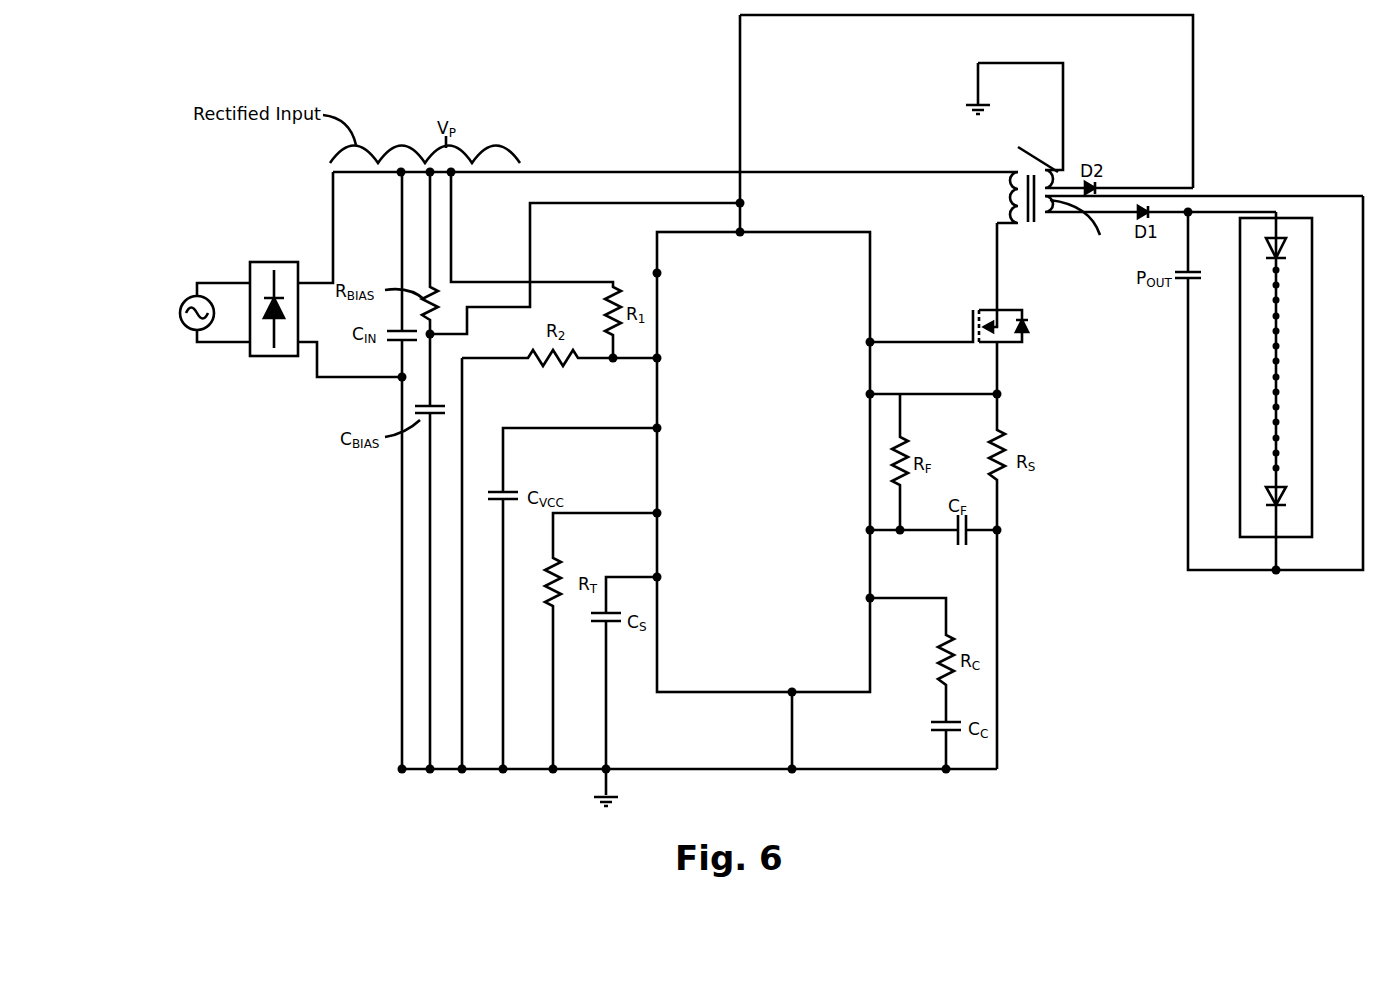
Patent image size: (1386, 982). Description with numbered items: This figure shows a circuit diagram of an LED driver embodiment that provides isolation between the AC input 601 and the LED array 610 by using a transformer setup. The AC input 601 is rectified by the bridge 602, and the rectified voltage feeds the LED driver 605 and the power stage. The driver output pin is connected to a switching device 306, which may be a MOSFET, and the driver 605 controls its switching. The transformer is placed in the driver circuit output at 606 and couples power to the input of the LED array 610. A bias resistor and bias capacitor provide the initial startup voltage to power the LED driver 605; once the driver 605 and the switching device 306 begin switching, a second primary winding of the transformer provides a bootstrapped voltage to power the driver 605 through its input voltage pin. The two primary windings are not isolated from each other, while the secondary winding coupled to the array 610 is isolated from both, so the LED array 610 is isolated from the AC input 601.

The AC input 601 is at (188, 295).
The bridge 602 is at (248, 267).
The LED driver 605 is at (797, 232).
The switching device 306 is at (997, 305).
The driver circuit output 606 is at (1045, 225).
The LED array 610 is at (1300, 370).